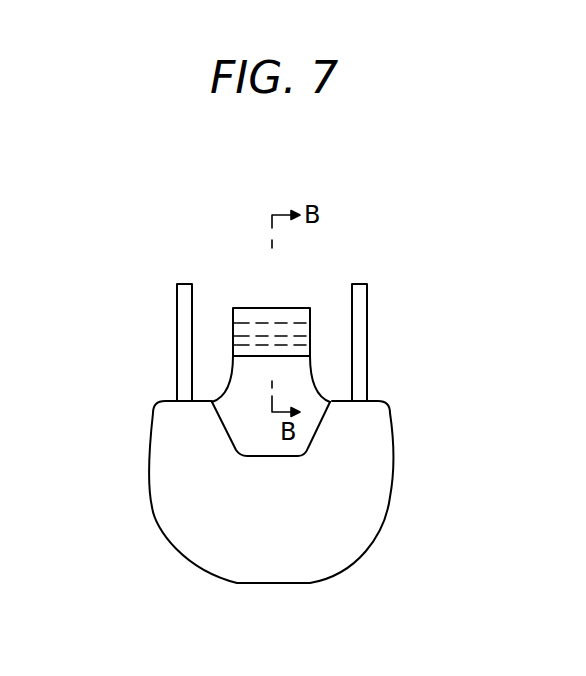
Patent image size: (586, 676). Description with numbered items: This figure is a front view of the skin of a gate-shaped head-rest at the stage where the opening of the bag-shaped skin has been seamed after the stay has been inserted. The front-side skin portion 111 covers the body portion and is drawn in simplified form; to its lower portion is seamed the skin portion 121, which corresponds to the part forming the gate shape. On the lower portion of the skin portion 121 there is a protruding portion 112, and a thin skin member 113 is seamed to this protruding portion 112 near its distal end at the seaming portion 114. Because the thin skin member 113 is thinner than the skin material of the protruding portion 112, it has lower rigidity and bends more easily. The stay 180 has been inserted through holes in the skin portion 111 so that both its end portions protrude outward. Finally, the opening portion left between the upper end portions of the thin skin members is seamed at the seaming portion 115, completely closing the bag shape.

The front-side skin portion 111 is at (393, 471).
The protruding portion 112 is at (288, 336).
The thin skin member 113 is at (277, 322).
The seaming portion 114 is at (248, 346).
The seaming portion 115 is at (255, 323).
The skin portion 121 is at (233, 447).
The stay 180 is at (367, 343).